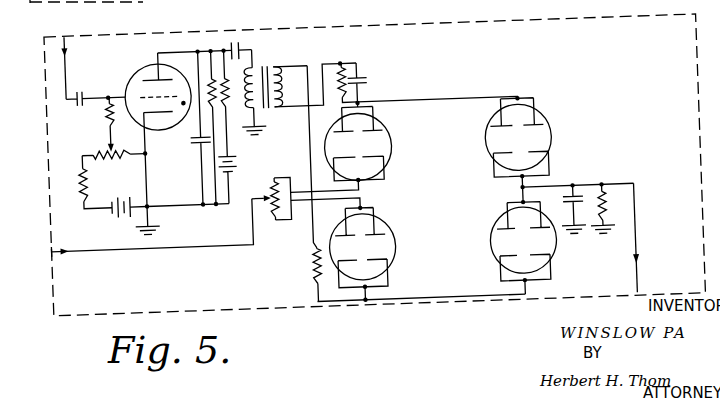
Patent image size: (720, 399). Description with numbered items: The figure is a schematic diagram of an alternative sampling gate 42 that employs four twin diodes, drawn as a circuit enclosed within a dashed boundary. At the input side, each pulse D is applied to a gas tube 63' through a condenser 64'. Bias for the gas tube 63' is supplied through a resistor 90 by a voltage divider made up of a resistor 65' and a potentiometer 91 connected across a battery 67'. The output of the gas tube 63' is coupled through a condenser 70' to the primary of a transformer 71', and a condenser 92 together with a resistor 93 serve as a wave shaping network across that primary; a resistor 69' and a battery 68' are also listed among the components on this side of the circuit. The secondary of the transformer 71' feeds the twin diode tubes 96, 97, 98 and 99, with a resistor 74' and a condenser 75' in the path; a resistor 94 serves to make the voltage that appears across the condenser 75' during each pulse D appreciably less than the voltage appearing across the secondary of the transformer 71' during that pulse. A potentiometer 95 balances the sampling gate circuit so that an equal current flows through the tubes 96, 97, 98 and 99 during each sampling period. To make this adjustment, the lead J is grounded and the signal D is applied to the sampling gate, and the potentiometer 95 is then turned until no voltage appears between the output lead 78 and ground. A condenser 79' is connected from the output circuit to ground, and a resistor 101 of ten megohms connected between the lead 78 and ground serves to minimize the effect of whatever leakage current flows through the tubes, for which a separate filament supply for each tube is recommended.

The sampling gate 42 is at (212, 37).
The pulse D is at (65, 57).
The lead J is at (148, 253).
The gas tube 63' is at (159, 134).
The condenser 64' is at (95, 83).
The resistor 65' is at (81, 181).
The battery 67' is at (117, 219).
The battery 68' is at (251, 179).
The resistor 69' is at (254, 96).
The condenser 70' is at (256, 32).
The transformer 71' is at (291, 93).
The resistor 74' is at (360, 68).
The condenser 75' is at (385, 84).
The lead 78 is at (629, 250).
The condenser 79' is at (573, 190).
The resistor 90 is at (104, 127).
The potentiometer 91 is at (106, 160).
The condenser 92 is at (187, 148).
The resistor 93 is at (209, 57).
The resistor 94 is at (306, 282).
The potentiometer 95 is at (268, 229).
The tube 96 is at (387, 149).
The tube 97 is at (389, 253).
The tube 98 is at (549, 137).
The tube 99 is at (549, 274).
The resistor 101 is at (600, 213).